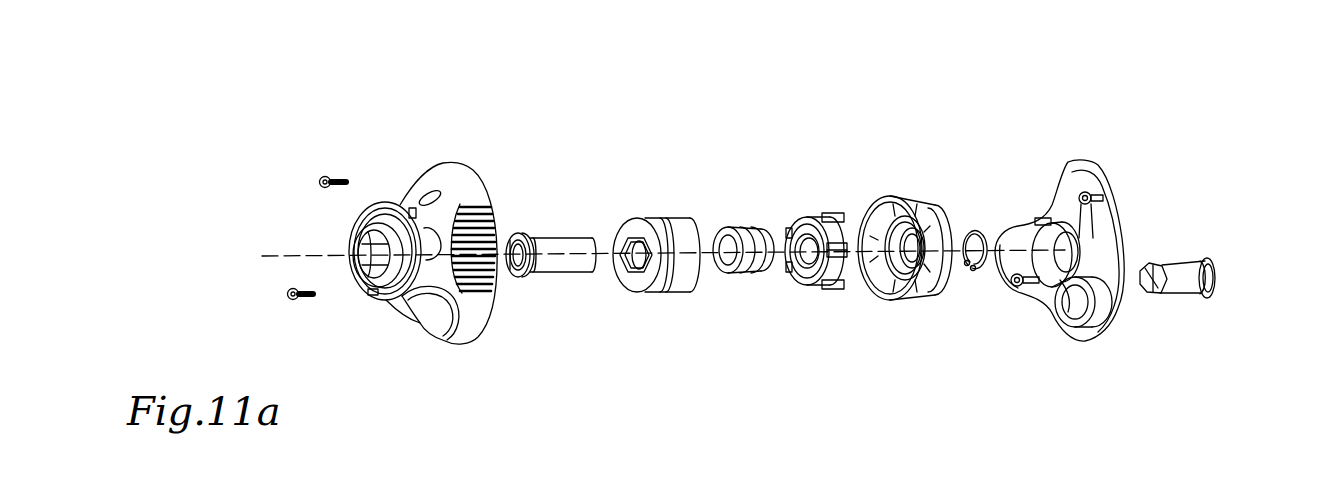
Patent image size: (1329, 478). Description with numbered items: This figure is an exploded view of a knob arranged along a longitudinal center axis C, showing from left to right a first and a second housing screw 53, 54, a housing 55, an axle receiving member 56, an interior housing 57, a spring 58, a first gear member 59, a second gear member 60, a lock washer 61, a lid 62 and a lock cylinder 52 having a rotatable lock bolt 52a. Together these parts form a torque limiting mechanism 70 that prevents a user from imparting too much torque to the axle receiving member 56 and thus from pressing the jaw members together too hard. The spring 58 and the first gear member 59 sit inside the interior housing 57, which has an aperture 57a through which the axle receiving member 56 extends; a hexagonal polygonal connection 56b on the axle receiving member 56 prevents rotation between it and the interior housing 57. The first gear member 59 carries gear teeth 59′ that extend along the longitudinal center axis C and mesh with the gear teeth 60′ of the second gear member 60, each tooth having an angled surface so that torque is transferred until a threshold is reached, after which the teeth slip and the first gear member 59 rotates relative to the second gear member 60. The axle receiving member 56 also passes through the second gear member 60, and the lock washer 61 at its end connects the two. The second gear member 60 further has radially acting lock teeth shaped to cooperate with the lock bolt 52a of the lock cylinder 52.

The longitudinal center axis C is at (285, 257).
The lock cylinder 52 is at (1182, 277).
The lock bolt 52a is at (1143, 283).
The first housing screw 53 is at (340, 174).
The second housing screw 54 is at (298, 300).
The housing 55 is at (443, 177).
The axle receiving member 56 is at (550, 251).
The polygonal connection 56b is at (513, 274).
The interior housing 57 is at (656, 242).
The aperture 57a is at (630, 270).
The spring 58 is at (730, 230).
The first gear member 59 is at (807, 259).
The gear teeth 59′ is at (835, 222).
The second gear member 60 is at (913, 251).
The gear teeth 60′ is at (890, 272).
The lock washer 61 is at (967, 266).
The lid 62 is at (1067, 200).
The torque limiting mechanism 70 is at (1223, 141).